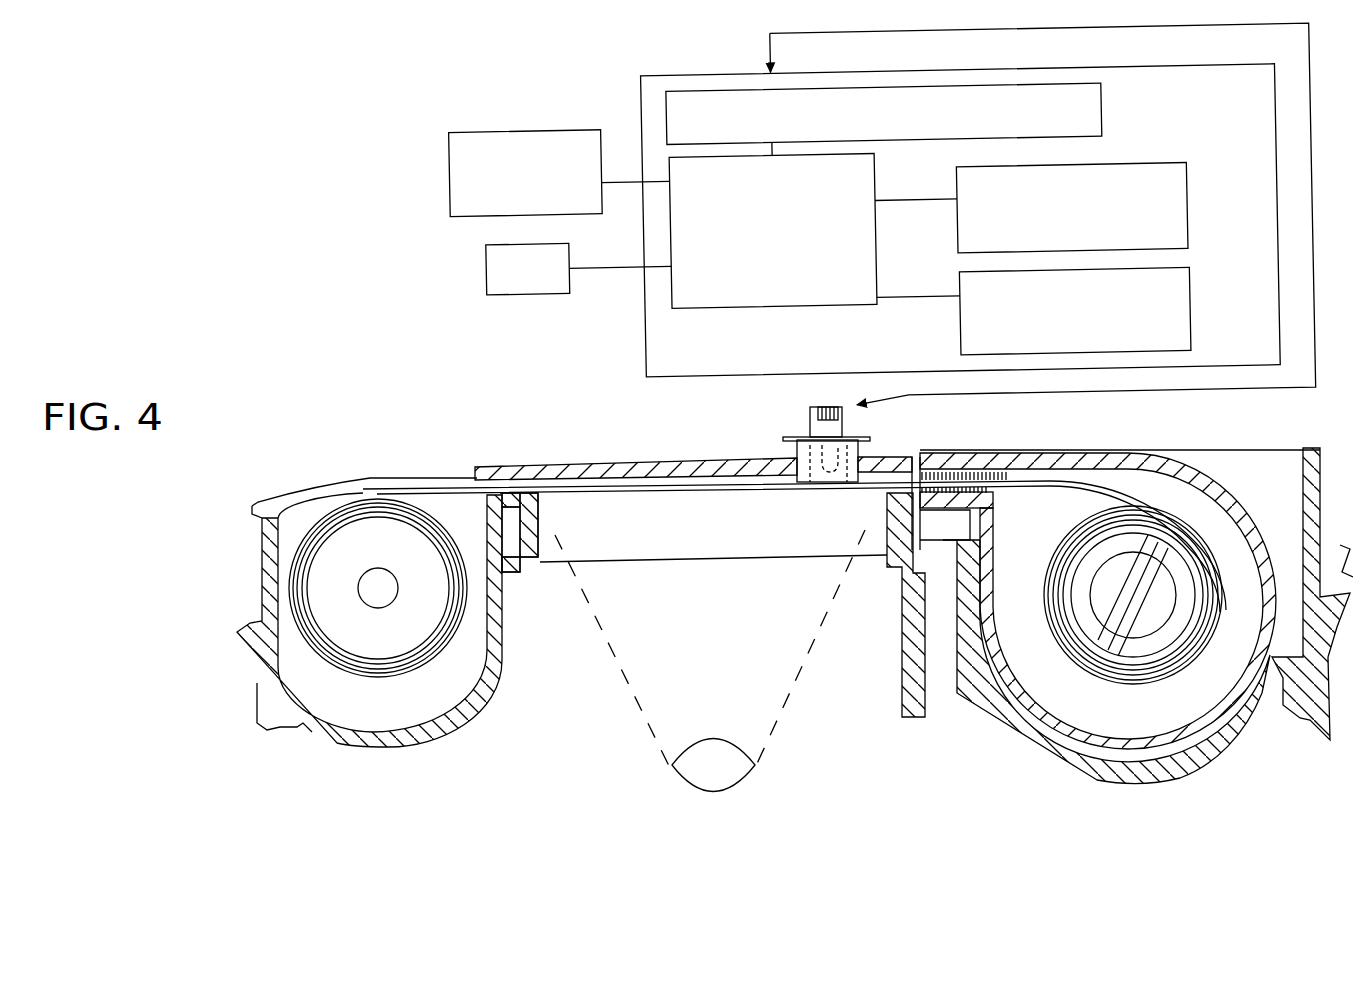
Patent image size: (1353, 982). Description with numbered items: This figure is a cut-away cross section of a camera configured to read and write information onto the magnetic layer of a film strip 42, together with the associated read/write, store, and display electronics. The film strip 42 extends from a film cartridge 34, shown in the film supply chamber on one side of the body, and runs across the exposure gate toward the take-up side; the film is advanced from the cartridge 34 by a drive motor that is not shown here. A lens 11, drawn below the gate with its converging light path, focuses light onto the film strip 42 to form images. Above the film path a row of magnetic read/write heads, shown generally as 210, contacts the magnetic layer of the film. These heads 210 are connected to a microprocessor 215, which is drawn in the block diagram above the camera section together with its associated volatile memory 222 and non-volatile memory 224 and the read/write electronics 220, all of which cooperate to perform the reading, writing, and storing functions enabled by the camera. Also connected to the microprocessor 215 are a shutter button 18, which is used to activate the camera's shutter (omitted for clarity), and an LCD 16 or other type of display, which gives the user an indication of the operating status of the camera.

The lens 11 is at (681, 780).
The LCD 16 is at (485, 261).
The shutter button 18 is at (450, 175).
The film cartridge 34 is at (998, 452).
The film strip 42 is at (673, 486).
The magnetic read/write heads 210 is at (805, 425).
The microprocessor 215 is at (774, 304).
The read/write electronics 220 is at (1103, 116).
The volatile memory 222 is at (1187, 209).
The non-volatile memory 224 is at (1188, 322).